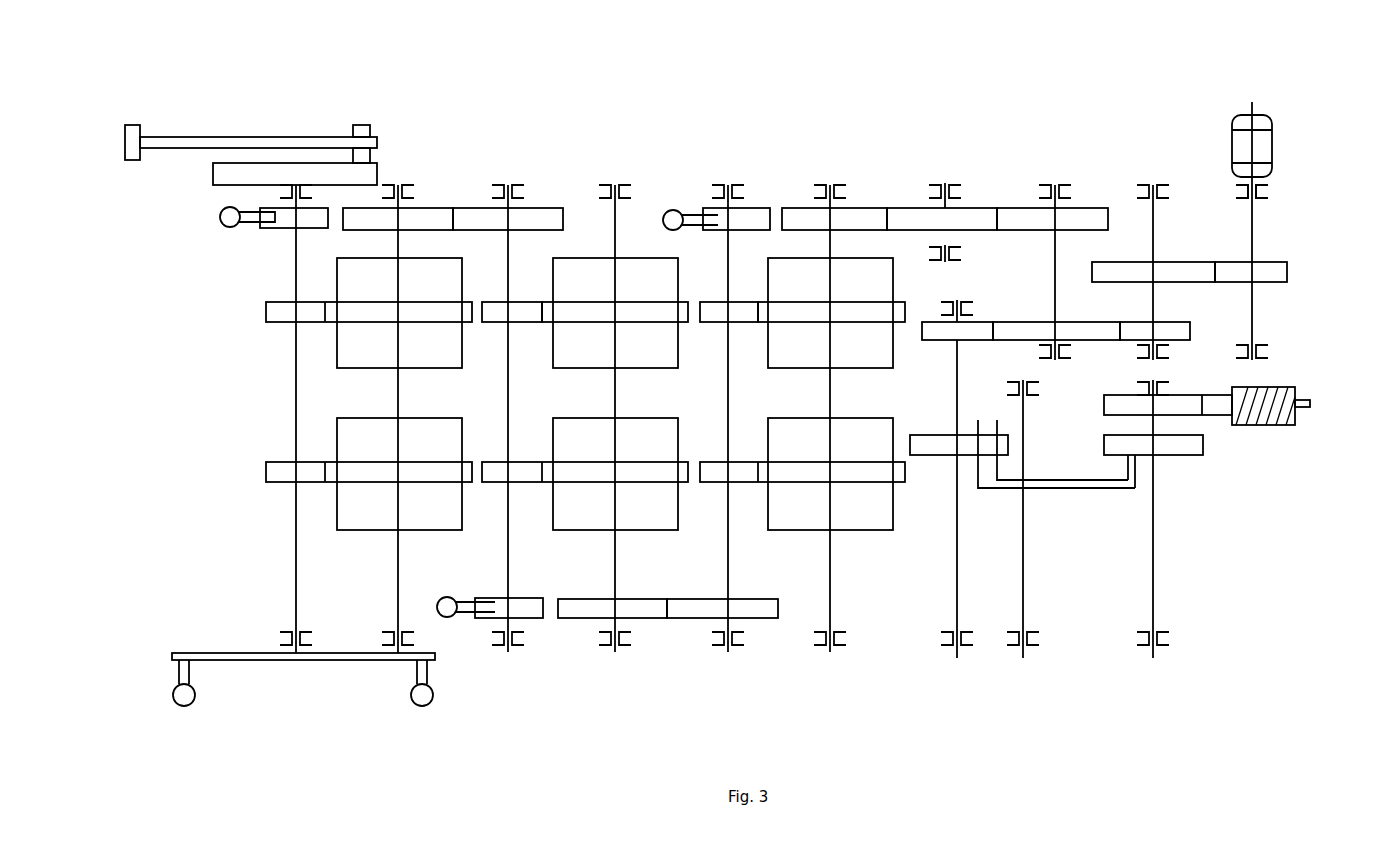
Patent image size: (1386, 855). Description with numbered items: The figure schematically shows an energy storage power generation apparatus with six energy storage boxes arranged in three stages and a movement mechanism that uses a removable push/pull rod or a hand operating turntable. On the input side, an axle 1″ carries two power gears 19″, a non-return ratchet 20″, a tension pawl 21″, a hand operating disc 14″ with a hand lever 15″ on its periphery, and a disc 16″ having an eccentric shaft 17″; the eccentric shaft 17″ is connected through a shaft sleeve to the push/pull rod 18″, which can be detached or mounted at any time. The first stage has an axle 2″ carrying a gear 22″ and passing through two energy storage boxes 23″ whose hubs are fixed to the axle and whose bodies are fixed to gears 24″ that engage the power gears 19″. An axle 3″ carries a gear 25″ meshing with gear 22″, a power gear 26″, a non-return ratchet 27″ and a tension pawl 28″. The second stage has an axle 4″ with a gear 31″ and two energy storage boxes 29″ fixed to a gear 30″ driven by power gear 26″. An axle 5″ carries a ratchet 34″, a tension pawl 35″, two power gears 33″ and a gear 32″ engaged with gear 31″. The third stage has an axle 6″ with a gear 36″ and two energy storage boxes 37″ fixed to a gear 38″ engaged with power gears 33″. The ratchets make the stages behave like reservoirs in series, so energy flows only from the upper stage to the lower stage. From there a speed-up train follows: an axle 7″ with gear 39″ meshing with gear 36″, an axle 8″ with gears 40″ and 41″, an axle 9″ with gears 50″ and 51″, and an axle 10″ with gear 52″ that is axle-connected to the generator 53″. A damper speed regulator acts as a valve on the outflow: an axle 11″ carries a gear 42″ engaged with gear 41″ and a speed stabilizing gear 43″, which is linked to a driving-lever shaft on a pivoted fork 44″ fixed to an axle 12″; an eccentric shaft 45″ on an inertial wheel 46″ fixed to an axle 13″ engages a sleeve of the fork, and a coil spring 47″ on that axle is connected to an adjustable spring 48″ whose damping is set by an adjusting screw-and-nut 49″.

The axle 1 is at (296, 382).
The axle 2 is at (398, 185).
The axle 3 is at (508, 185).
The axle 4 is at (618, 277).
The axle 5 is at (752, 218).
The axle 6 is at (830, 283).
The axle 7 is at (1057, 180).
The axle 8 is at (1152, 180).
The axle 9 is at (1177, 327).
The axle 10 is at (1253, 335).
The axle 11 is at (957, 658).
The axle 12 is at (1023, 658).
The axle 13 is at (1153, 658).
The hand operating disc 14 is at (235, 660).
The hand lever 15 is at (408, 700).
The disc 16 is at (247, 182).
The eccentric shaft 17 is at (357, 130).
The push/pull rod 18 is at (198, 147).
The power gear 19 is at (282, 315).
The non-return ratchet 20 is at (287, 222).
The tension pawl 21 is at (232, 226).
The gear 22 is at (437, 220).
The energy storage box 23 is at (352, 438).
The gear 24 is at (355, 470).
The gear 25 is at (490, 220).
The power gear 26 is at (512, 310).
The non-return ratchet 27 is at (495, 610).
The tension pawl 28 is at (445, 620).
The energy storage box 29 is at (633, 310).
The gear 30 is at (662, 213).
The gear 31 is at (568, 608).
The gear 32 is at (682, 608).
The power gear 33 is at (803, 218).
The ratchet 34 is at (754, 310).
The tension pawl 35 is at (677, 207).
The gear 36 is at (907, 220).
The energy storage box 37 is at (848, 310).
The gear 38 is at (830, 183).
The gear 39 is at (972, 330).
The gear 40 is at (1057, 327).
The gear 41 is at (1162, 277).
The gear 42 is at (1070, 218).
The speed stabilizing gear 43 is at (918, 445).
The pivoted fork 44 is at (987, 483).
The eccentric shaft 45 is at (1127, 487).
The inertial wheel 46 is at (1175, 447).
The coil spring 47 is at (1162, 408).
The adjustable spring 48 is at (1268, 427).
The adjusting screw-and-nut 49 is at (1295, 423).
The gear 50 is at (1262, 140).
The gear 51 is at (1252, 183).
The gear 52 is at (1270, 118).
The generator 53 is at (1263, 273).